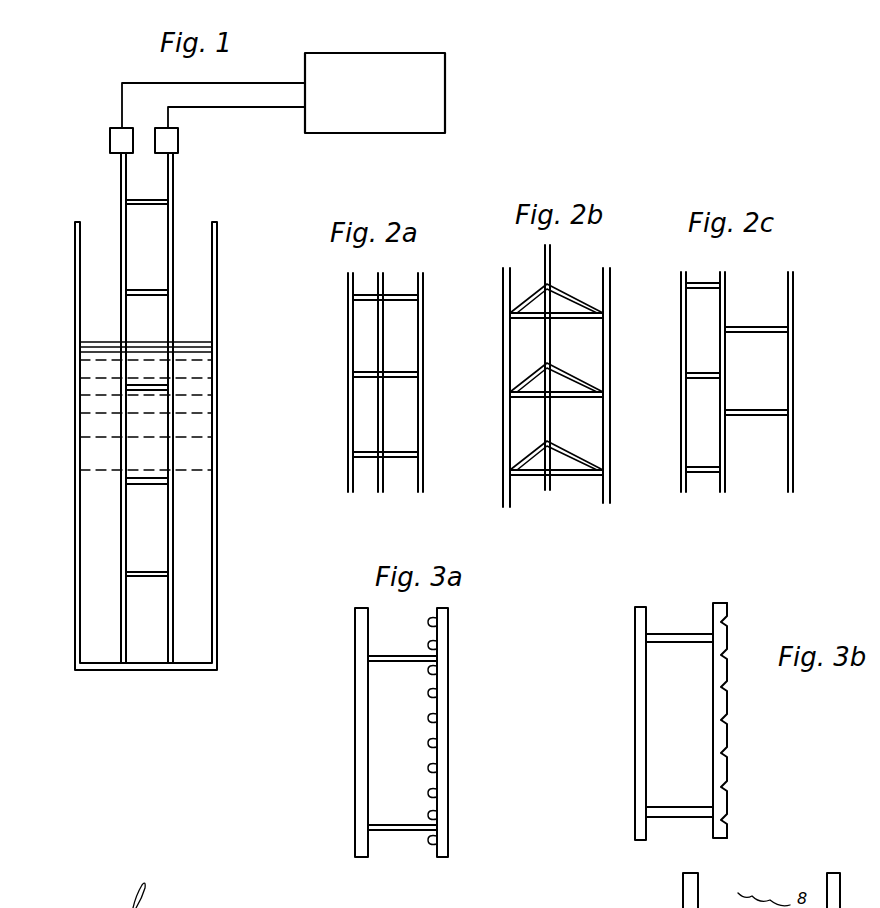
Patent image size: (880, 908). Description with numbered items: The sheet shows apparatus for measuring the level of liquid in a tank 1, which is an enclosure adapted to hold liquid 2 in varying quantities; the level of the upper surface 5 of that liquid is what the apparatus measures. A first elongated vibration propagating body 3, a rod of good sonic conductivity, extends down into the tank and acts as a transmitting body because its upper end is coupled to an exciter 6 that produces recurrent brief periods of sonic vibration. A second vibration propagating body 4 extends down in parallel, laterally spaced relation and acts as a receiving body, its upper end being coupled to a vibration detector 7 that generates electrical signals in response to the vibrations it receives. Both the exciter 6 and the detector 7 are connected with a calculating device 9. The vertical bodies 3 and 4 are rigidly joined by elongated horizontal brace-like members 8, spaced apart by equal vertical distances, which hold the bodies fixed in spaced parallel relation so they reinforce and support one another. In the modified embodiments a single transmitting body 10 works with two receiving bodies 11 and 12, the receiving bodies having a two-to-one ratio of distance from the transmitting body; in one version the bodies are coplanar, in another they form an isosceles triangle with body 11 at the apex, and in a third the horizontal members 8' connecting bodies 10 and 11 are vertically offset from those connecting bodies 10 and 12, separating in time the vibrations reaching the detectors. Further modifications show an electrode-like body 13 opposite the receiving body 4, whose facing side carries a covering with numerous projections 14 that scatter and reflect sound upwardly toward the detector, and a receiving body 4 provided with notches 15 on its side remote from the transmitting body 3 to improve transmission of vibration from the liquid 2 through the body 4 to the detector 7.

In FIG. 1, the tank 1 is at (80, 553).
In FIG. 1, the liquid 2 is at (95, 517).
In FIG. 1, the first vibration propagating body 3 is at (121, 210).
In FIG. 3B, the first vibration propagating body 3 is at (640, 677).
In FIG. 1, the receiving vibration propagating body 4 is at (173, 218).
In FIG. 3A, the receiving vibration propagating body 4 is at (448, 630).
In FIG. 3B, the receiving vibration propagating body 4 is at (745, 720).
In FIG. 1, the upper surface of liquid 5 is at (100, 342).
In FIG. 1, the exciter 6 is at (110, 141).
In FIG. 1, the vibration detector 7 is at (178, 140).
In FIG. 1, the horizontal brace-like members 8 is at (147, 388).
In FIG. 2A, the horizontal brace-like members 8 is at (385, 376).
In FIG. 2B, the horizontal brace-like members 8 is at (556, 379).
In FIG. 3A, the horizontal brace-like members 8 is at (402, 744).
In FIG. 3B, the horizontal brace-like members 8 is at (679, 710).
In FIG. 2C, the horizontal members connecting bodies 10 and 11 8' is at (703, 377).
In FIG. 1, the calculating device 9 is at (405, 74).
In FIG. 2A, the transmitting body 10 is at (378, 326).
In FIG. 2B, the transmitting body 10 is at (545, 323).
In FIG. 2C, the transmitting body 10 is at (725, 437).
In FIG. 2A, the nearer receiving body 11 is at (348, 303).
In FIG. 2B, the nearer receiving body 11 is at (503, 352).
In FIG. 2C, the nearer receiving body 11 is at (681, 450).
In FIG. 2A, the farther receiving body 12 is at (418, 350).
In FIG. 2B, the farther receiving body 12 is at (610, 345).
In FIG. 2C, the farther receiving body 12 is at (793, 295).
In FIG. 3A, the electrode 13 is at (355, 625).
In FIG. 3A, the projections 14 is at (430, 724).
In FIG. 3B, the cavities or notches 15 is at (723, 718).